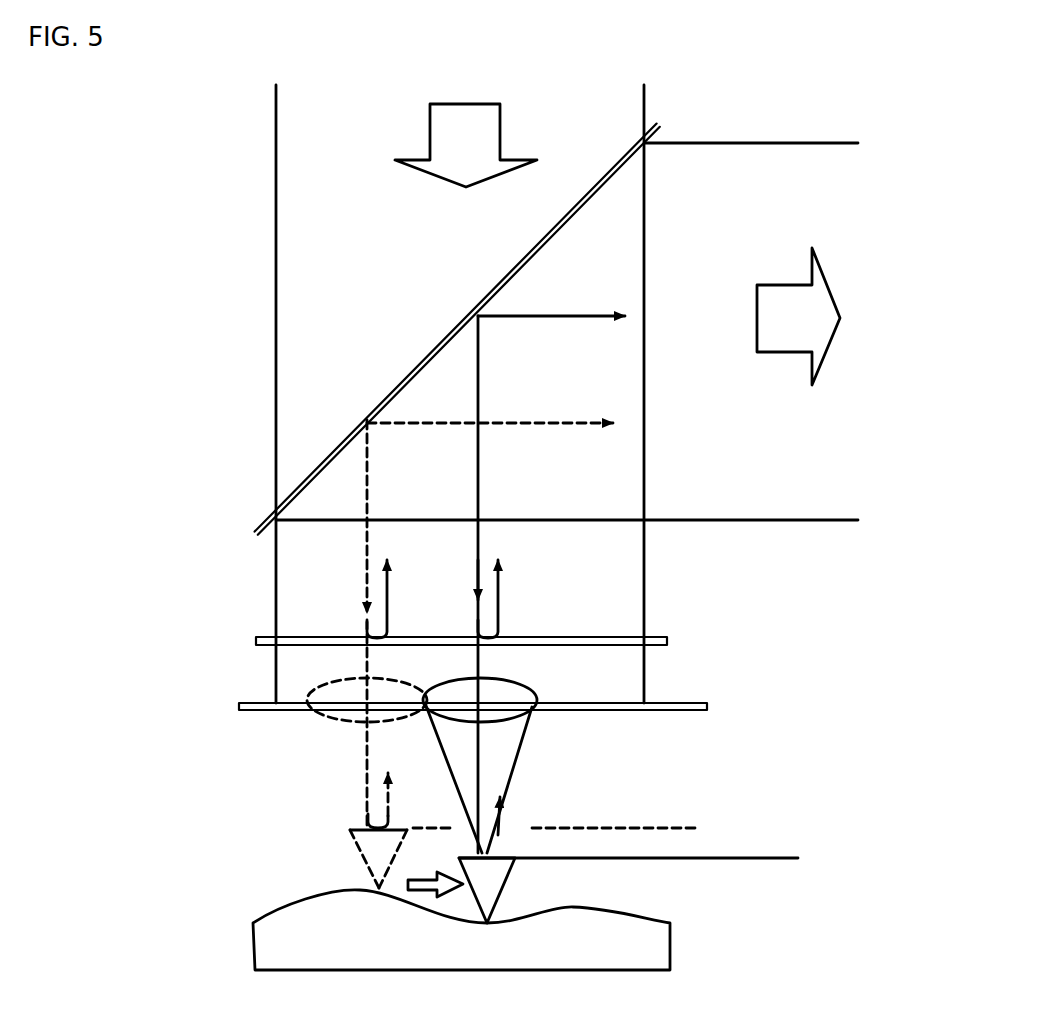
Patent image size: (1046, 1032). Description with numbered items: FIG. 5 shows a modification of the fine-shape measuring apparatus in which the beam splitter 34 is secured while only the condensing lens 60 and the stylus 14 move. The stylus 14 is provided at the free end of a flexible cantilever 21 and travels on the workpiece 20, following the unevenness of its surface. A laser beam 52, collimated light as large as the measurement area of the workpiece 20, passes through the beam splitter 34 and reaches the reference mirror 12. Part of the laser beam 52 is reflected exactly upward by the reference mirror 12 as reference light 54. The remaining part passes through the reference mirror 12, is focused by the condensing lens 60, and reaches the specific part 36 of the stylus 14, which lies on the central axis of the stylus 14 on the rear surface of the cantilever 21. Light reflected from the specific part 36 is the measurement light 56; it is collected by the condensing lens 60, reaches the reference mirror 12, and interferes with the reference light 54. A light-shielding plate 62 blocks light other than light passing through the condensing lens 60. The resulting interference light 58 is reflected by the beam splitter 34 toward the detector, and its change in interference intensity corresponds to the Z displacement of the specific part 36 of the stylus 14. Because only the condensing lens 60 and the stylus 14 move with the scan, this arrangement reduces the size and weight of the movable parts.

The reference mirror 12 is at (261, 637).
The stylus 14 is at (503, 887).
The workpiece 20 is at (302, 900).
The cantilever 21 is at (763, 857).
The beam splitter 34 is at (340, 440).
The specific part of the stylus 36 is at (472, 847).
The laser beam 52 is at (501, 116).
The reference light 54 is at (500, 602).
The measurement light 56 is at (503, 835).
The interference light 58 is at (768, 285).
The condensing lens 60 is at (526, 706).
The light-shielding plate 62 is at (692, 702).